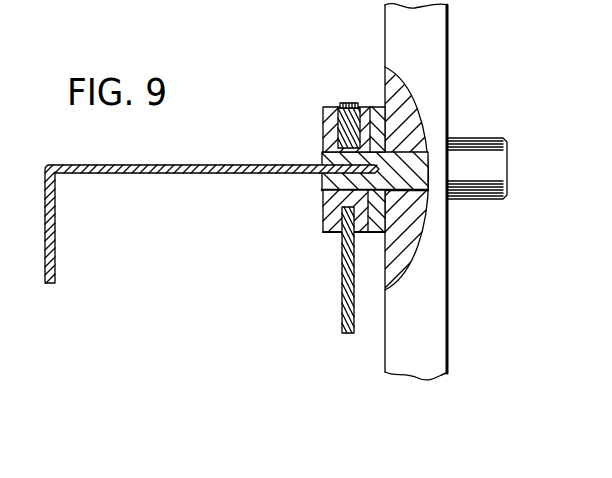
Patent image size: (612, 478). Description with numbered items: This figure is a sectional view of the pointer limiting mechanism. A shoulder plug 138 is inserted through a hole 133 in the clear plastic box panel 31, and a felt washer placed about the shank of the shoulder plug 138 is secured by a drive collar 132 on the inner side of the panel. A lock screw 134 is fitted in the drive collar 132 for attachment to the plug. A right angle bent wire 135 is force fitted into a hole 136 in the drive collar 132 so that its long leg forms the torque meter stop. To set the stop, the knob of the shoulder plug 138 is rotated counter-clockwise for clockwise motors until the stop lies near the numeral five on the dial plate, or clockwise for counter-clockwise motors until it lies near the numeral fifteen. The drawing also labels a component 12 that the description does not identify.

The panel 12 is at (452, 74).
The clear plastic box panel 31 is at (448, 317).
The drive collar 132 is at (333, 232).
The hole 133 is at (415, 128).
The lock screw 134 is at (349, 103).
The right angle bent wire 135 is at (147, 165).
The hole 136 is at (322, 153).
The shoulder plug 138 is at (463, 200).